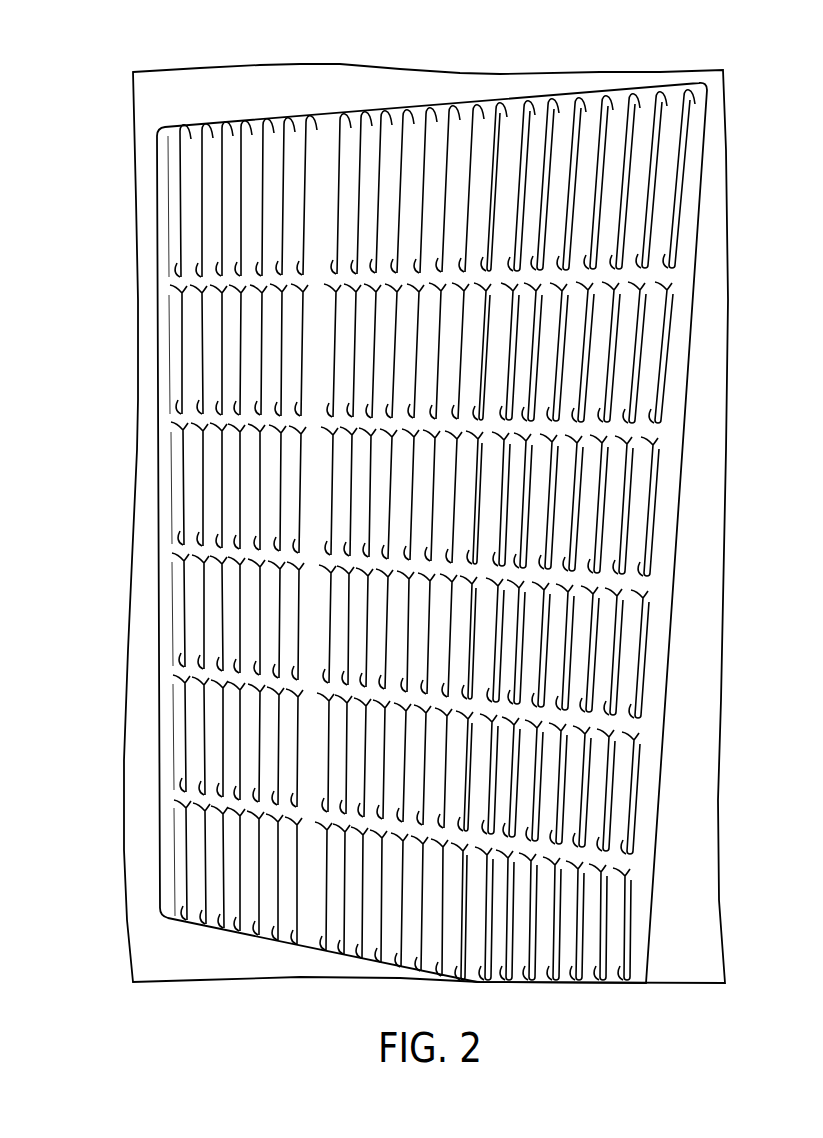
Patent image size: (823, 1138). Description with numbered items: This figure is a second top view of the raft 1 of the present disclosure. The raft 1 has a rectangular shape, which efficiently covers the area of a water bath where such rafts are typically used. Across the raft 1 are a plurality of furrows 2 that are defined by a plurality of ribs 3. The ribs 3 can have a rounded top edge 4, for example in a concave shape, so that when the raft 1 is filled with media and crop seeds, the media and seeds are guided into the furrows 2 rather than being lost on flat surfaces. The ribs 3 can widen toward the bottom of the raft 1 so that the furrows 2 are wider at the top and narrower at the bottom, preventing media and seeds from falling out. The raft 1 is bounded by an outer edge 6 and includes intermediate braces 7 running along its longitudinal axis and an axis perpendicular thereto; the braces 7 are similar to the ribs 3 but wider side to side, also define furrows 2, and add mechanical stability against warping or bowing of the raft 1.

The raft 1 is at (74, 93).
The furrows 2 is at (170, 323).
The ribs 3 is at (182, 370).
The rounded top edge 4 is at (187, 457).
The outer edge 6 is at (158, 632).
The intermediate braces 7 is at (323, 130).